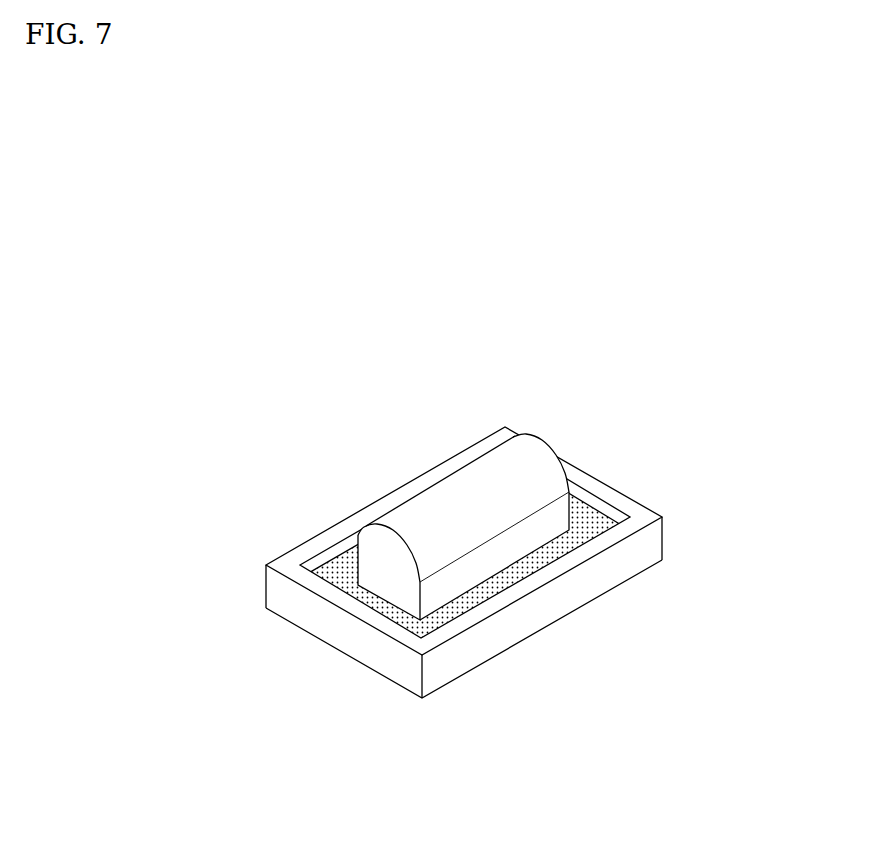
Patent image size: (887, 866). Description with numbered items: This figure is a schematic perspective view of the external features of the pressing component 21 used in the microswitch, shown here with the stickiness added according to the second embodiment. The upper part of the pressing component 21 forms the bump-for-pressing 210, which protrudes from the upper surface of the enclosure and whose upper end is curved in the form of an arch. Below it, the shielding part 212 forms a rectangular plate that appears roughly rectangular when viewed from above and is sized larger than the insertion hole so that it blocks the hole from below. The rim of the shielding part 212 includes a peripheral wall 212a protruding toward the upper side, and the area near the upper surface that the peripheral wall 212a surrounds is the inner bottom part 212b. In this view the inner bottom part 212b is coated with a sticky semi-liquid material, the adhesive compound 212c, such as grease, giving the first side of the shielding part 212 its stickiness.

The pressing component 21 is at (762, 349).
The bump-for-pressing 210 is at (528, 455).
The shielding part 212 is at (469, 635).
The peripheral wall 212a is at (582, 555).
The inner bottom part 212b is at (503, 593).
The adhesive compound 212c is at (465, 621).